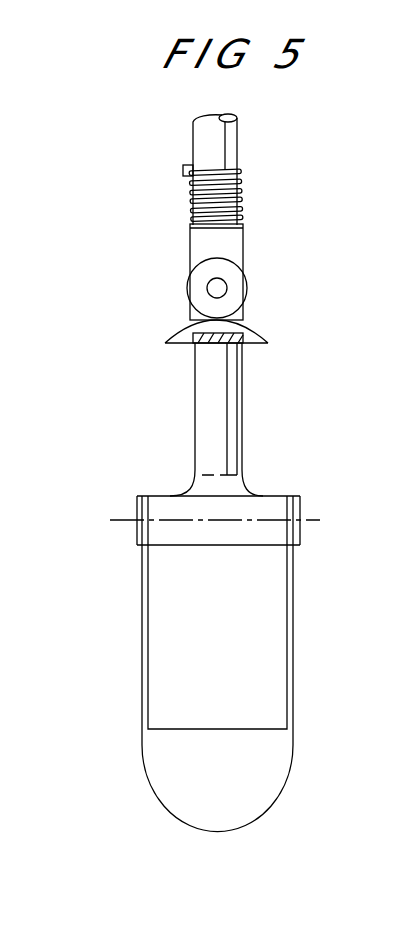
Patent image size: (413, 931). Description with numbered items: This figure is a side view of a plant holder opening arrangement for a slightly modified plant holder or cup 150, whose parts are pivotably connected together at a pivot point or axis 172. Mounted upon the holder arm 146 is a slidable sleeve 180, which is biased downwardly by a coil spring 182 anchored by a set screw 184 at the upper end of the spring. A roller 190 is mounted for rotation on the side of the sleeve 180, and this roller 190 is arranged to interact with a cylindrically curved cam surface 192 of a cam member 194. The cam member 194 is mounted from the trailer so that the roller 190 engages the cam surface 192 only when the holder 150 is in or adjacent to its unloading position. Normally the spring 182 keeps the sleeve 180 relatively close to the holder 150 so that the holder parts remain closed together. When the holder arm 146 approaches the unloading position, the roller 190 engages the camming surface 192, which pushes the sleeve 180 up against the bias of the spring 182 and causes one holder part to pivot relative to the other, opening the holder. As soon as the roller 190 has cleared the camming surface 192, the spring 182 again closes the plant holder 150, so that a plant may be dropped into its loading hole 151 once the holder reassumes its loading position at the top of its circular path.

The holder arm 146 is at (237, 143).
The set screw 184 is at (183, 168).
The coil spring 182 is at (243, 190).
The slidable sleeve 180 is at (243, 245).
The roller 190 is at (247, 290).
The cam surface 192 is at (268, 338).
The cam member 194 is at (207, 347).
The pivot point or axis 172 is at (312, 515).
The loading hole 151 is at (149, 646).
The plant holder or cup 150 is at (293, 758).